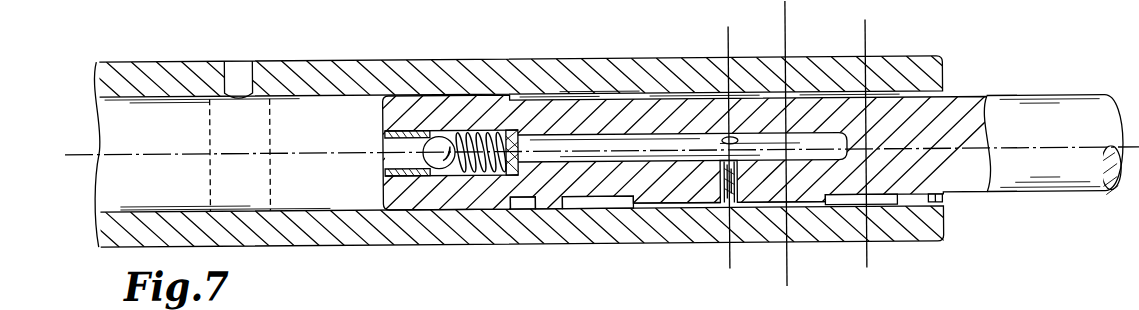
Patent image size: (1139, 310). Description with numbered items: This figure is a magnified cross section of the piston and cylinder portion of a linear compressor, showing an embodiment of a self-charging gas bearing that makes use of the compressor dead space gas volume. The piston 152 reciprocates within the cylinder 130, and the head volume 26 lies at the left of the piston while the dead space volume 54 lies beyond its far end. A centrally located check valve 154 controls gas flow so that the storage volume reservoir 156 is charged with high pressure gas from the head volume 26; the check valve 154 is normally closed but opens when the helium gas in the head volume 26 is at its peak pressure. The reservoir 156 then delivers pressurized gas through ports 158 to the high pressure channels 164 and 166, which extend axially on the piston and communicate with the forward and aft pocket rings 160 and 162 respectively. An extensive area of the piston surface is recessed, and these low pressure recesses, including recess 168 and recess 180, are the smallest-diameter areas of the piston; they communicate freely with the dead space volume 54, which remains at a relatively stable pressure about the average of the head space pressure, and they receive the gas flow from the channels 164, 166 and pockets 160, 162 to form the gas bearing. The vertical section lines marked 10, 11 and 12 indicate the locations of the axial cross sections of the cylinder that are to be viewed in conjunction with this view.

The head volume 26 is at (313, 113).
The cylinder 130 is at (381, 60).
The dead space volume 54 is at (1047, 247).
The piston 152 is at (1050, 147).
The check valve 154 is at (437, 160).
The reservoir 156 is at (567, 147).
The ports 158 is at (717, 180).
The forward pocket ring 160 is at (593, 208).
The aft pocket ring 162 is at (842, 207).
The high pressure channel 164 is at (642, 205).
The high pressure channel 166 is at (768, 207).
The low pressure recess 168 is at (642, 97).
The low pressure recess 180 is at (523, 208).
The section line 10- 10 is at (742, 37).
The section line 11- 11 is at (801, 12).
The section line 12- 12 is at (884, 32).